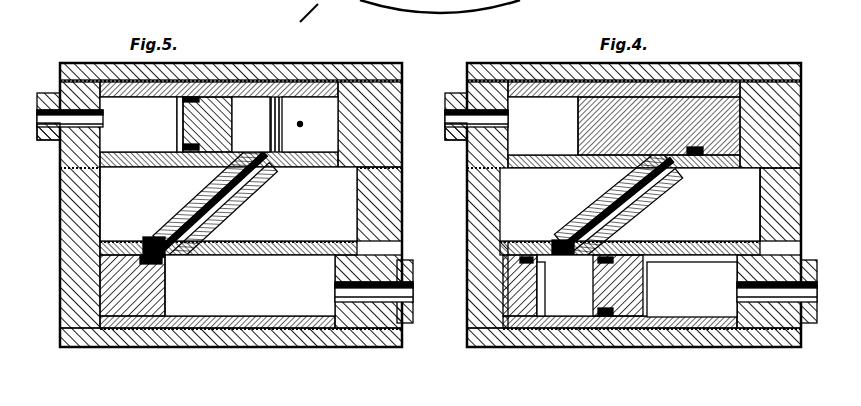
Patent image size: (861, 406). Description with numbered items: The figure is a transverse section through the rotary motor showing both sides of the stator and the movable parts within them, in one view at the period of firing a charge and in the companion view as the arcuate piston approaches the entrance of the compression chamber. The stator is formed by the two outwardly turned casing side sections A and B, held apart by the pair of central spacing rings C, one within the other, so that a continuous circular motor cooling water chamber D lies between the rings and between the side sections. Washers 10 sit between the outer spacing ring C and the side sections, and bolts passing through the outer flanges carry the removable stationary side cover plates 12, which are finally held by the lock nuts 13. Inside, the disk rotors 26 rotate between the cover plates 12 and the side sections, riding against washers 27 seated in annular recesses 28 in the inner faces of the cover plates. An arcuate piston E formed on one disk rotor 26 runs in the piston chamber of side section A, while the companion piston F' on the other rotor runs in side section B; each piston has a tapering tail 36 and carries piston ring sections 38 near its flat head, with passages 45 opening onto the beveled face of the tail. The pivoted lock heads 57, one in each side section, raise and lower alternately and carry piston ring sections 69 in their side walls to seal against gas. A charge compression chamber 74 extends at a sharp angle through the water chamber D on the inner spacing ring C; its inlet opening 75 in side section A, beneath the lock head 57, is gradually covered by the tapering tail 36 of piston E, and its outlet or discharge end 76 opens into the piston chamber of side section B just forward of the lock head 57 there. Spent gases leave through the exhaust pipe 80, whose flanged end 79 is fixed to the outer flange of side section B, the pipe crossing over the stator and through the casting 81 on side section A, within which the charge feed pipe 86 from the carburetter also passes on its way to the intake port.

In FIG. 5, the washers 10 is at (108, 237).
In FIG. 4, the washers 10 is at (740, 200).
In FIG. 5, the removable stationary side cover plates 12 is at (318, 346).
In FIG. 4, the removable stationary side cover plates 12 is at (748, 66).
In FIG. 5, the lock nuts 13 is at (372, 67).
In FIG. 4, the lock nuts 13 is at (634, 71).
In FIG. 5, the disk rotors 26 is at (245, 342).
In FIG. 4, the disk rotors 26 is at (565, 86).
In FIG. 5, the washers 27 is at (400, 81).
In FIG. 4, the washers 27 is at (799, 82).
In FIG. 5, the annular recesses 28 is at (88, 79).
In FIG. 4, the annular recesses 28 is at (790, 78).
In FIG. 5, the tapering tail 36 is at (310, 124).
In FIG. 5, the piston ring sections 38 is at (170, 262).
In FIG. 4, the piston ring sections 38 is at (527, 241).
In FIG. 5, the passages 45 is at (301, 121).
In FIG. 5, the lock heads 57 is at (240, 100).
In FIG. 4, the lock heads 57 is at (645, 288).
In FIG. 5, the piston ring sections 69 is at (178, 147).
In FIG. 4, the piston ring sections 69 is at (605, 318).
In FIG. 5, the charge compression chamber 74 is at (195, 206).
In FIG. 4, the charge compression chamber 74 is at (590, 207).
In FIG. 5, the inlet opening 75 is at (296, 172).
In FIG. 4, the inlet opening 75 is at (673, 176).
In FIG. 5, the outlet or discharge end 76 is at (208, 254).
In FIG. 4, the outlet or discharge end 76 is at (560, 224).
In FIG. 5, the flanged end 79 is at (403, 268).
In FIG. 4, the flanged end 79 is at (803, 262).
In FIG. 5, the exhaust pipe 80 is at (413, 295).
In FIG. 4, the exhaust pipe 80 is at (810, 313).
In FIG. 5, the casting 81 is at (43, 136).
In FIG. 4, the casting 81 is at (450, 141).
In FIG. 5, the charge feed pipe 86 is at (50, 101).
In FIG. 4, the charge feed pipe 86 is at (450, 120).
In FIG. 5, the casing side section A is at (75, 92).
In FIG. 4, the casing side section A is at (773, 132).
In FIG. 5, the casing side section B is at (80, 289).
In FIG. 4, the casing side section B is at (470, 308).
In FIG. 5, the spacing rings C is at (80, 203).
In FIG. 4, the spacing rings C is at (483, 197).
In FIG. 5, the motor cooling water chamber D is at (279, 221).
In FIG. 4, the motor cooling water chamber D is at (689, 228).
In FIG. 5, the arcuate piston E is at (251, 124).
In FIG. 4, the arcuate piston E is at (603, 128).
In FIG. 5, the piston F' is at (132, 323).
In FIG. 4, the piston F' is at (528, 323).